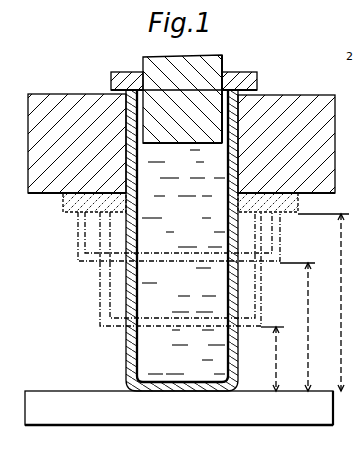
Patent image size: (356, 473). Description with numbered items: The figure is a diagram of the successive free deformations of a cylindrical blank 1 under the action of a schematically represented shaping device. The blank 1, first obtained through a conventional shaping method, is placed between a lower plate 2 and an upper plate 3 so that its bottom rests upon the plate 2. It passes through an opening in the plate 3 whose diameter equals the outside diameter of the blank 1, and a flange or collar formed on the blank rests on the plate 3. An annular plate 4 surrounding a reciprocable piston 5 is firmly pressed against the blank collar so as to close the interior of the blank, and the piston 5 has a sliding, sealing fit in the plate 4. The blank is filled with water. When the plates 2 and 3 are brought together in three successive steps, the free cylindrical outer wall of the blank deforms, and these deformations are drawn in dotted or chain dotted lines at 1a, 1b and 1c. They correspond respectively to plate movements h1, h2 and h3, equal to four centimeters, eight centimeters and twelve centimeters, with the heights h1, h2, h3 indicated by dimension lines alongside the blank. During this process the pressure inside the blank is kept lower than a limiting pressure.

The cylindrical blank 1 is at (128, 289).
The first deformation of the blank 1a is at (256, 302).
The second deformation of the blank 1b is at (281, 246).
The third deformation of the blank 1c is at (300, 206).
The plate 2 is at (193, 425).
The plate 3 is at (60, 105).
The annular plate 4 is at (258, 81).
The reciprocable piston 5 is at (207, 58).
The first step of plate movement h1 is at (277, 359).
The second step of plate movement h2 is at (303, 327).
The third step of plate movement h3 is at (327, 302).